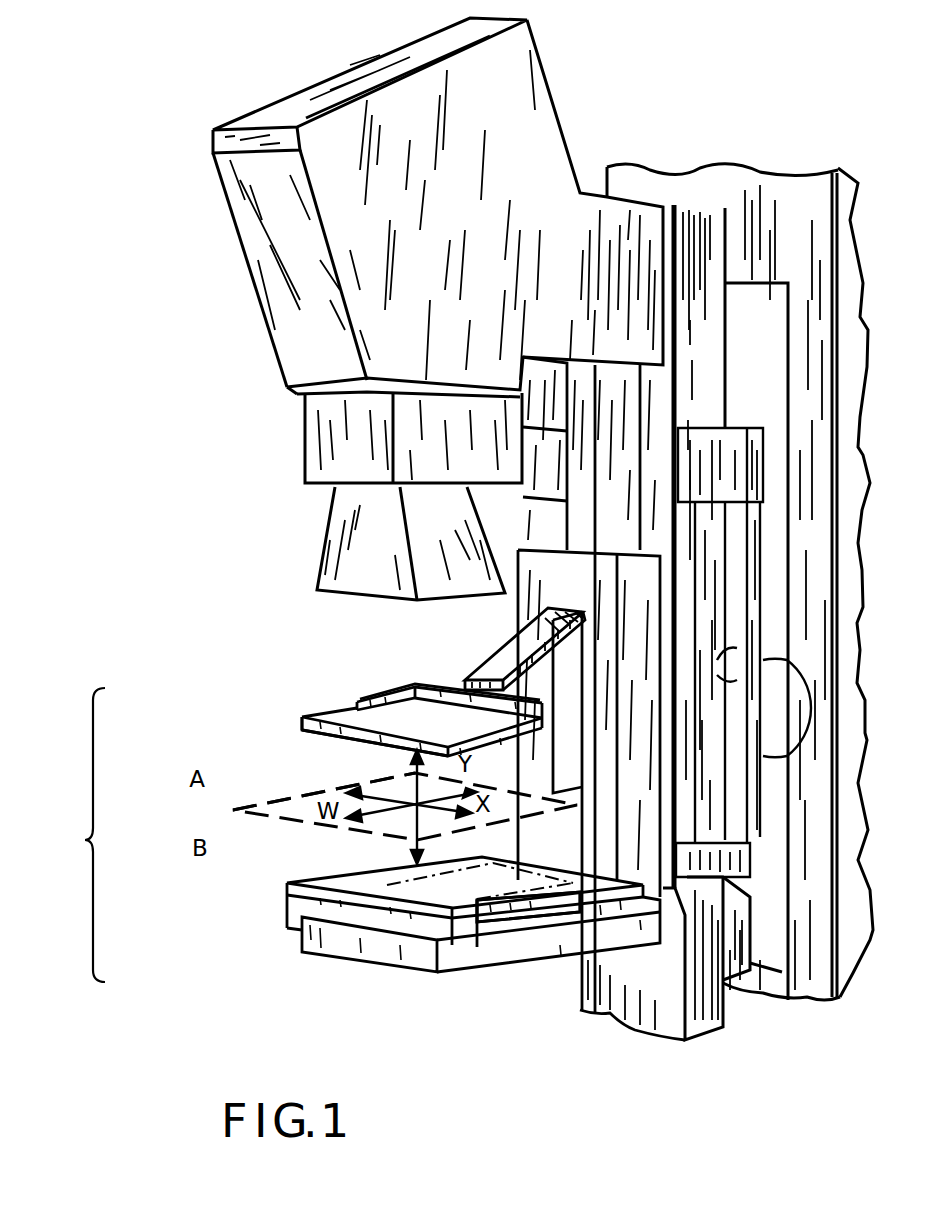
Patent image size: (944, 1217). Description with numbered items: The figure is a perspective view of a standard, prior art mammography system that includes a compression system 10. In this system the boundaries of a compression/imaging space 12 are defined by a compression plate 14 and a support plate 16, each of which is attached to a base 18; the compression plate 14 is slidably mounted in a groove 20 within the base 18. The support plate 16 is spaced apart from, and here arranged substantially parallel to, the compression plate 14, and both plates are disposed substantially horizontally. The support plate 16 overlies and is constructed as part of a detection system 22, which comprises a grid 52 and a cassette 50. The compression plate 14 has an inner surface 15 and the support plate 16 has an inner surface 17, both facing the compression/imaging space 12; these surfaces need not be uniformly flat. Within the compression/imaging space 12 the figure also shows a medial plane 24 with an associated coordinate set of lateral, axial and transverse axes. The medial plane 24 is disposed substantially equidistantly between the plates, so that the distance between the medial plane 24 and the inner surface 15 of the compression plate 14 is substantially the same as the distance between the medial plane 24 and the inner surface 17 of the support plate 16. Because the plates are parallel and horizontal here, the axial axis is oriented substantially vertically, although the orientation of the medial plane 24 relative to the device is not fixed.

The compression system 10 is at (72, 835).
The compression/imaging space 12 is at (220, 817).
The compression plate 14 is at (340, 712).
The inner surface of the compression plate 15 is at (307, 735).
The support plate 16 is at (548, 866).
The inner surface of the support plate 17 is at (567, 867).
The base 18 is at (628, 786).
The groove 20 is at (567, 692).
The detection system 22 is at (257, 922).
The medial plane 24 is at (295, 797).
The cassette 50 is at (500, 933).
The grid 52 is at (475, 947).